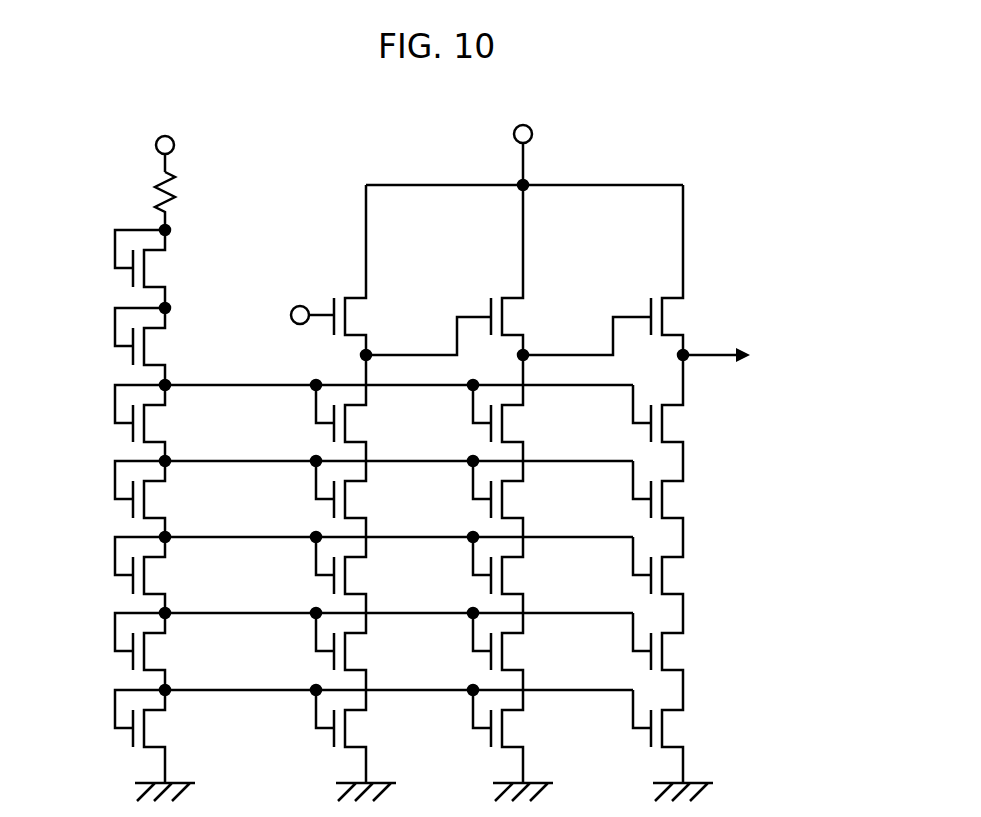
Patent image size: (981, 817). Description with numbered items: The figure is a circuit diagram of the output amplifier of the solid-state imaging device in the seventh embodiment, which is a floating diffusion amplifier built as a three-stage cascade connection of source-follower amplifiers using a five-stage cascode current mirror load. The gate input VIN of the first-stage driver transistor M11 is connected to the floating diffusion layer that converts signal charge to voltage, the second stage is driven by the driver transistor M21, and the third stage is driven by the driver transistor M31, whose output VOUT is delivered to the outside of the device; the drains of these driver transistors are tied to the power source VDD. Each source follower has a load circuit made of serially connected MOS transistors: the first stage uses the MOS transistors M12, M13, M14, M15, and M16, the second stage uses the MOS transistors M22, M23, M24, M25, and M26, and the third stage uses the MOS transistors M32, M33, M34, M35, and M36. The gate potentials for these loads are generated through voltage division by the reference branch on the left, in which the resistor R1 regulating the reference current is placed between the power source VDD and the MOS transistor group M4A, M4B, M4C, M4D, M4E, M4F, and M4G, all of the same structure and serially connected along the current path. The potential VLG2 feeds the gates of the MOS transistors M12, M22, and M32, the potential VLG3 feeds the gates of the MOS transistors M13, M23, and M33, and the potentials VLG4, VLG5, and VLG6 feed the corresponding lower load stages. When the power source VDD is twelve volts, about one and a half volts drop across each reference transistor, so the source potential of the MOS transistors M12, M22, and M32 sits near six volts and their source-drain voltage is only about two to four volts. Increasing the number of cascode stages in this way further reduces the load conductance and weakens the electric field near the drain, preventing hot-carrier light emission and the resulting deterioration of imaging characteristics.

The power source VDD is at (419, 153).
The resistor R1 is at (143, 201).
The MOS transistor M4A is at (108, 266).
The MOS transistor M4B is at (108, 344).
The MOS transistor M4C is at (108, 420).
The MOS transistor M4D is at (108, 496).
The MOS transistor M4E is at (108, 572).
The MOS transistor M4F is at (108, 649).
The MOS transistor M4G is at (121, 743).
The potential VLG2 is at (399, 373).
The potential VLG3 is at (399, 449).
The potential VLG4 is at (399, 525).
The potential VLG5 is at (399, 601).
The potential VLG6 is at (399, 678).
The gate input VIN is at (308, 302).
The first-stage driver transistor M11 is at (379, 285).
The MOS transistor M12 is at (370, 423).
The MOS transistor M13 is at (370, 499).
The MOS transistor M14 is at (370, 575).
The MOS transistor M15 is at (370, 651).
The MOS transistor M16 is at (370, 745).
The driver transistor M21 is at (473, 285).
The MOS transistor M22 is at (527, 423).
The MOS transistor M23 is at (527, 499).
The MOS transistor M24 is at (527, 575).
The MOS transistor M25 is at (527, 651).
The MOS transistor M26 is at (527, 745).
The driver transistor M31 is at (632, 285).
The MOS transistor M32 is at (687, 423).
The MOS transistor M33 is at (687, 499).
The MOS transistor M34 is at (687, 575).
The MOS transistor M35 is at (687, 651).
The MOS transistor M36 is at (687, 745).
The output VOUT is at (749, 356).